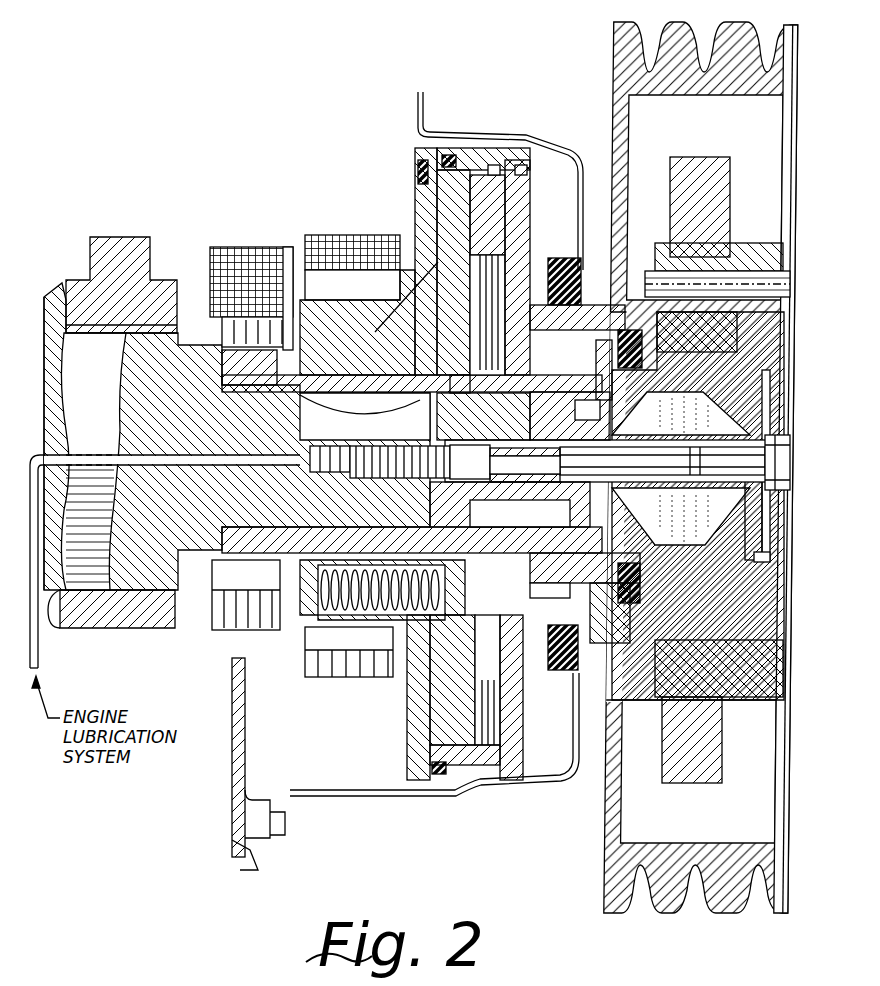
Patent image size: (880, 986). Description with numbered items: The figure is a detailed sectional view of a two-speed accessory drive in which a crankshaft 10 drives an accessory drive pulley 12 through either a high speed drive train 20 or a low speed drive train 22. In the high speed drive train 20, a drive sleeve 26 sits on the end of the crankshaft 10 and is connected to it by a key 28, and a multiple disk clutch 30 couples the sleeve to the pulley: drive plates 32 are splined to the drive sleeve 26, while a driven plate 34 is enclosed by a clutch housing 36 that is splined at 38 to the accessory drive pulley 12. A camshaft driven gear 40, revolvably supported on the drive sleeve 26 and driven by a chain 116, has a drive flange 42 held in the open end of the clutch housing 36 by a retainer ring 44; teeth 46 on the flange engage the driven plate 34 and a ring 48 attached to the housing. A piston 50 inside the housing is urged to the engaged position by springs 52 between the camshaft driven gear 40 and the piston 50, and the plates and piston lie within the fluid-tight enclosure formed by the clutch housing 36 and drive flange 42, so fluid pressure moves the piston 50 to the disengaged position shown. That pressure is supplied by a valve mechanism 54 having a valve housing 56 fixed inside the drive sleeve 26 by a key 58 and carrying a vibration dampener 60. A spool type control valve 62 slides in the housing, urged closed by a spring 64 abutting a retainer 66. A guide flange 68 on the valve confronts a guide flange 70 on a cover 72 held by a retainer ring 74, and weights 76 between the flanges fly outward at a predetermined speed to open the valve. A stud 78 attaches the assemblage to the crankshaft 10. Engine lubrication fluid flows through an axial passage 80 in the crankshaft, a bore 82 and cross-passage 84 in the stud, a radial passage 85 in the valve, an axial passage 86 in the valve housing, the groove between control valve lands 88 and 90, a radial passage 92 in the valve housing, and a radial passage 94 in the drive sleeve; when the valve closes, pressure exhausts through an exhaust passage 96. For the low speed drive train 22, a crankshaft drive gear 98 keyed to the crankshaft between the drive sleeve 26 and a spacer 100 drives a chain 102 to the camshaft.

The crankshaft 10 is at (237, 432).
The accessory drive pulley 12 is at (612, 52).
The high speed drive train 20 is at (505, 372).
The low speed drive train 22 is at (262, 247).
The drive sleeve 26 is at (322, 525).
The key 28 is at (310, 436).
The multiple disk clutch 30 is at (512, 196).
The drive plates 32 is at (480, 266).
The driven plate 34 is at (494, 165).
The clutch housing 36 is at (528, 142).
The spline 38 is at (575, 304).
The camshaft driven gear 40 is at (385, 335).
The drive flange 42 is at (418, 204).
The retainer ring 44 is at (418, 170).
The teeth 46 is at (522, 170).
The ring 48 is at (515, 216).
The piston 50 is at (445, 228).
The springs 52 is at (432, 618).
The valve mechanism 54 is at (585, 458).
The valve housing 56 is at (770, 345).
The key 58 is at (452, 372).
The vibration dampener 60 is at (710, 198).
The control valve 62 is at (430, 440).
The spring 64 is at (525, 465).
The retainer 66 is at (440, 423).
The guide flange 68 is at (560, 482).
The guide flange 70 is at (765, 390).
The cover 72 is at (765, 522).
The retainer ring 74 is at (765, 560).
The weights 76 is at (690, 485).
The stud 78 is at (778, 458).
The axial passage 80 is at (165, 457).
The bore 82 is at (352, 448).
The cross-passage 84 is at (481, 462).
The radial passage 85 is at (432, 500).
The axial passage 86 is at (492, 535).
The control valve land 88 is at (535, 425).
The control valve land 90 is at (582, 428).
The radial passage 92 is at (545, 560).
The radial passage 94 is at (515, 586).
The exhaust passage 96 is at (600, 400).
The crankshaft drive gear 98 is at (235, 365).
The spacer 100 is at (612, 322).
The chain 102 is at (212, 247).
The chain 116 is at (330, 235).